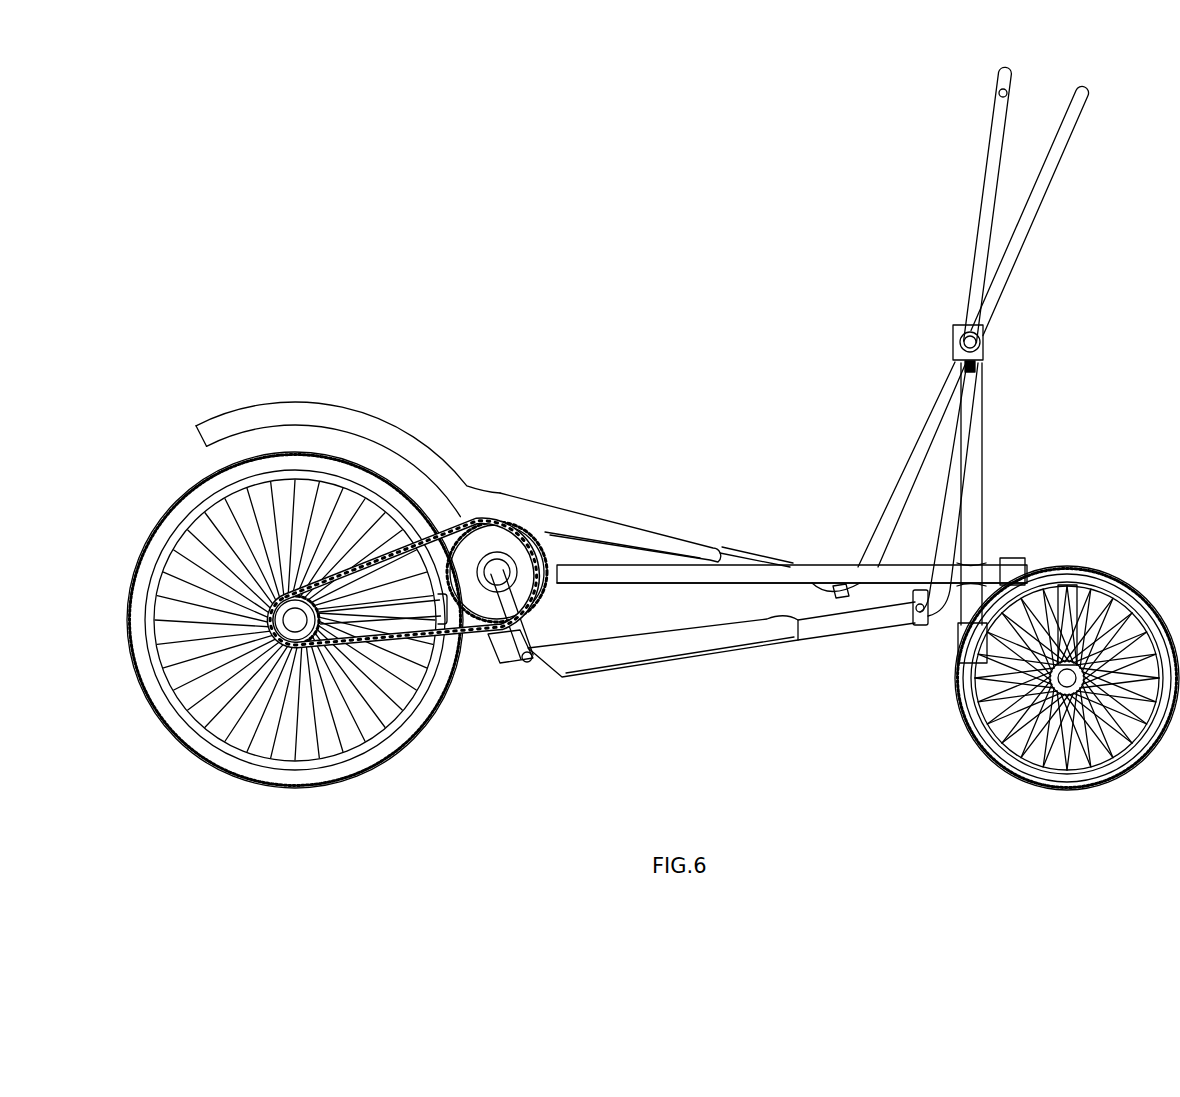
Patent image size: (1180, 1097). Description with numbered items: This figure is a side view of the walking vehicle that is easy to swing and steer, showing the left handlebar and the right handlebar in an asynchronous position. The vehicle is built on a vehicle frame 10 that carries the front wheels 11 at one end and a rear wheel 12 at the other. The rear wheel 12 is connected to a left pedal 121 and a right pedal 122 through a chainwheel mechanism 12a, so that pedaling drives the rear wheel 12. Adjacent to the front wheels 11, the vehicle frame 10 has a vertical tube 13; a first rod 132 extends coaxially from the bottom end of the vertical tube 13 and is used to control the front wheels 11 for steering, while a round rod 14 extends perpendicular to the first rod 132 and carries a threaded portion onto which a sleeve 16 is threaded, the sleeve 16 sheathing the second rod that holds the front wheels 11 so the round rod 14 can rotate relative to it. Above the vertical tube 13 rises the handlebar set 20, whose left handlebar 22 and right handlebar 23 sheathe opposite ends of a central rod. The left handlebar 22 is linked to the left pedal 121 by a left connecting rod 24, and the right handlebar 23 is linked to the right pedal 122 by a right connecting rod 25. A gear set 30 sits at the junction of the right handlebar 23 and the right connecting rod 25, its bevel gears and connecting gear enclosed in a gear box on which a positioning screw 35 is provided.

The vehicle frame 10 is at (706, 594).
The front wheels 11 is at (992, 745).
The rear wheel 12 is at (257, 470).
The chainwheel mechanism 12a is at (492, 537).
The left pedal 121 is at (577, 523).
The right pedal 122 is at (640, 658).
The vertical tube 13 is at (975, 430).
The first rod 132 is at (965, 604).
The round rod 14 is at (988, 573).
The sleeve 16 is at (1014, 567).
The handlebar set 20 is at (996, 214).
The left handlebar 22 is at (1044, 182).
The right handlebar 23 is at (1000, 93).
The left connecting rod 24 is at (902, 467).
The right connecting rod 25 is at (942, 513).
The gear set 30 is at (948, 315).
The positioning screw 35 is at (948, 383).